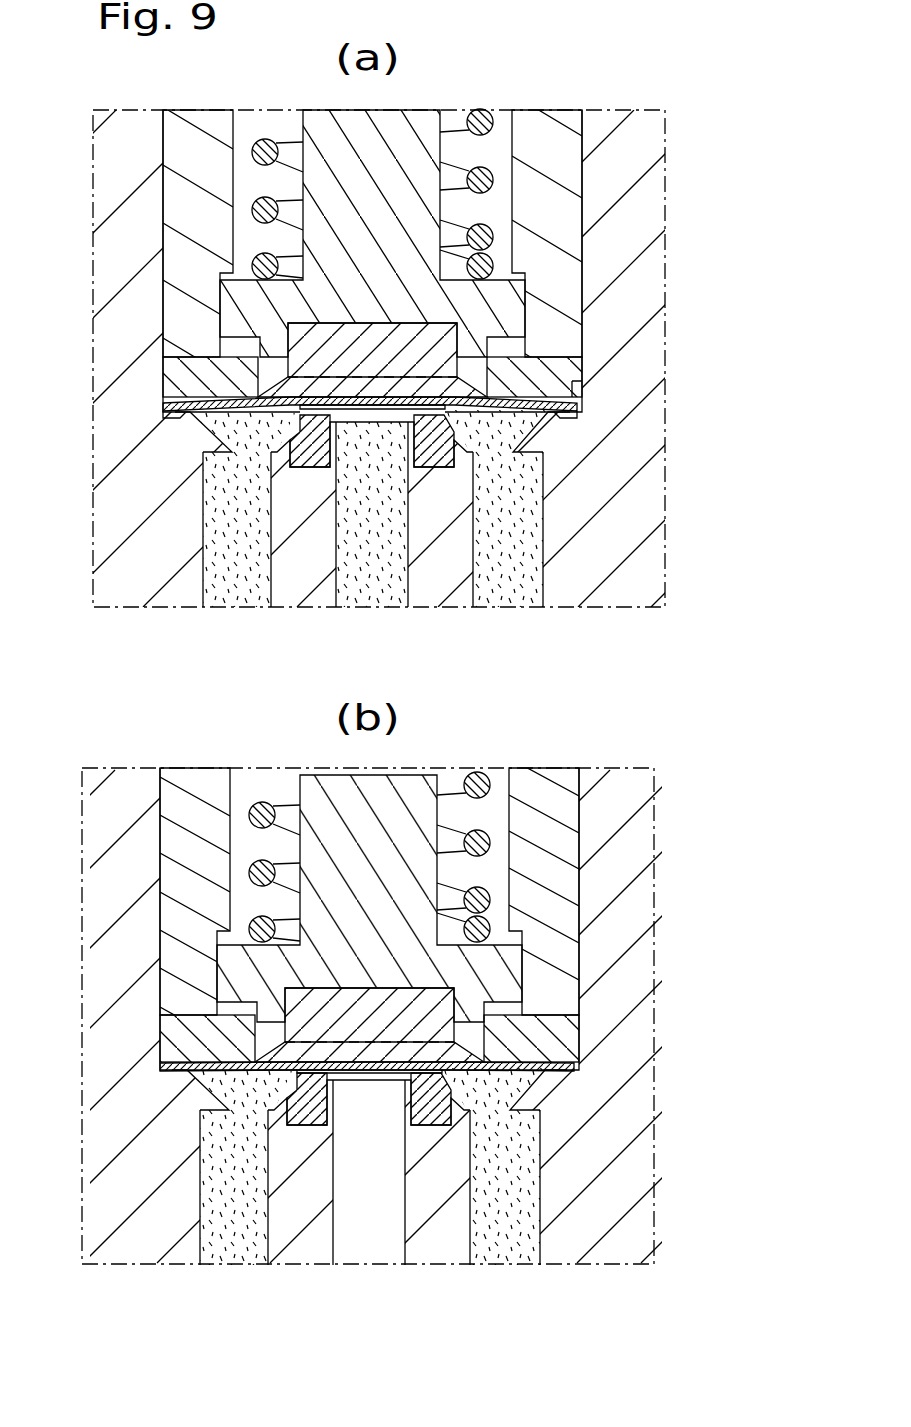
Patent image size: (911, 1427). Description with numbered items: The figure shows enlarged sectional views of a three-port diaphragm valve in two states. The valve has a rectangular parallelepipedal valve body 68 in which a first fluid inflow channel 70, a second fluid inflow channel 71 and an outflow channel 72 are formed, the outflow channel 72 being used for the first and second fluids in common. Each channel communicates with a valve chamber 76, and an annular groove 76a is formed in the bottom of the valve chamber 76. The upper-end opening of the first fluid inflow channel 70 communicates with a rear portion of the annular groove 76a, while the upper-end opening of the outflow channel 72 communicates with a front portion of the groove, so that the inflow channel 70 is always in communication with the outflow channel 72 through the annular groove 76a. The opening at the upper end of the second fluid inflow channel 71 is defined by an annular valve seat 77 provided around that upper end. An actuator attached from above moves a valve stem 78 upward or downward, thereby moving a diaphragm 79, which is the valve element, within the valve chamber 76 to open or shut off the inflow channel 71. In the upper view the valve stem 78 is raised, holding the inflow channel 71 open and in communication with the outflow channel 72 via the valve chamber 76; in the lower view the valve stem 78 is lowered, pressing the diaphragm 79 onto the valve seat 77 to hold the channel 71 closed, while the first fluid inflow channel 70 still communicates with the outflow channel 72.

The valve body 68 is at (640, 283).
The first fluid inflow channel 70 is at (217, 568).
The second fluid inflow channel 71 is at (385, 570).
The outflow channel 72 is at (517, 567).
The valve chamber 76 is at (493, 395).
The annular groove 76a is at (527, 426).
The annular valve seat 77 is at (307, 455).
The valve stem 78 is at (398, 143).
The diaphragm 79 is at (243, 410).